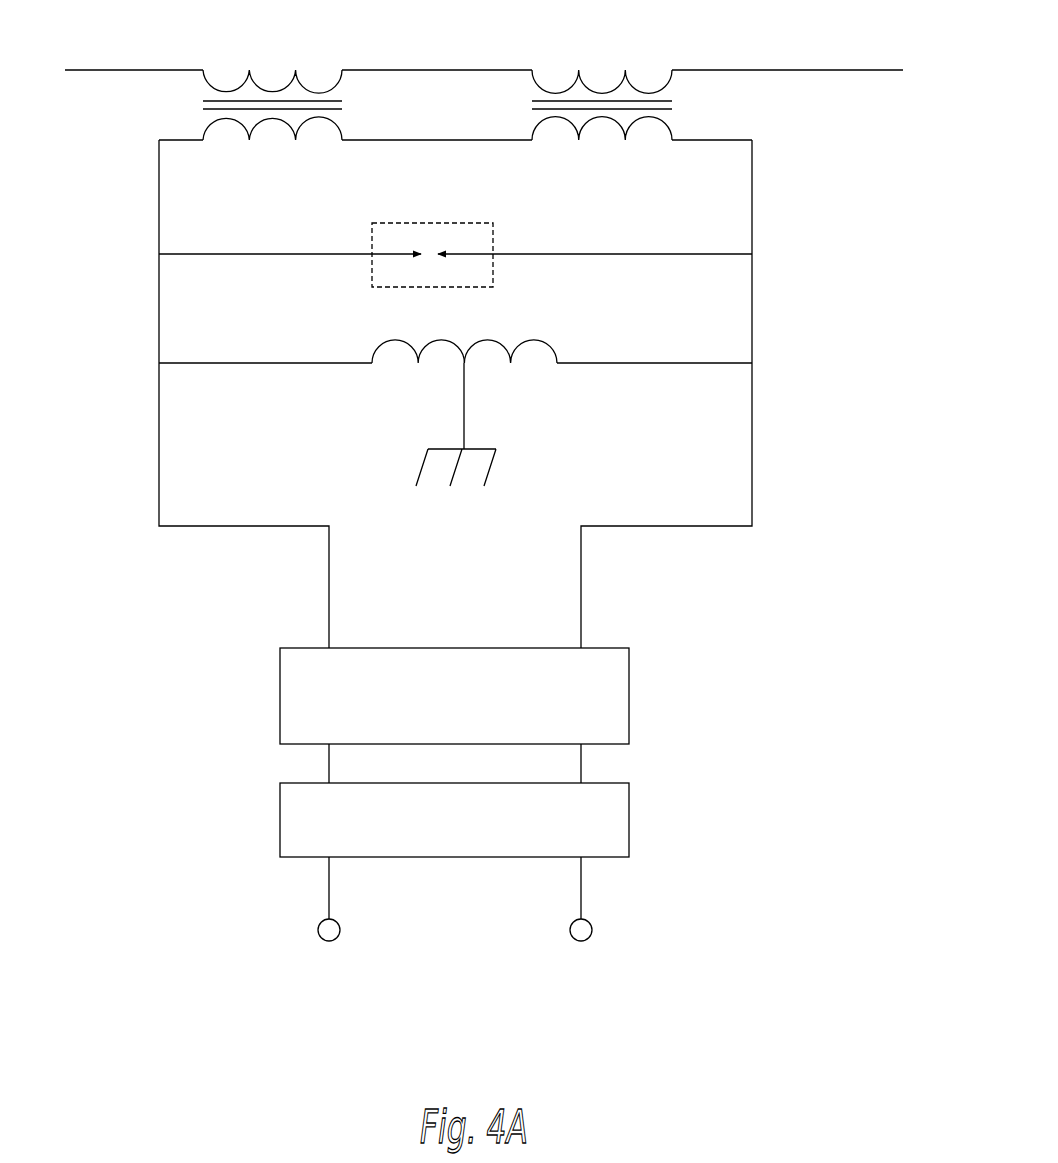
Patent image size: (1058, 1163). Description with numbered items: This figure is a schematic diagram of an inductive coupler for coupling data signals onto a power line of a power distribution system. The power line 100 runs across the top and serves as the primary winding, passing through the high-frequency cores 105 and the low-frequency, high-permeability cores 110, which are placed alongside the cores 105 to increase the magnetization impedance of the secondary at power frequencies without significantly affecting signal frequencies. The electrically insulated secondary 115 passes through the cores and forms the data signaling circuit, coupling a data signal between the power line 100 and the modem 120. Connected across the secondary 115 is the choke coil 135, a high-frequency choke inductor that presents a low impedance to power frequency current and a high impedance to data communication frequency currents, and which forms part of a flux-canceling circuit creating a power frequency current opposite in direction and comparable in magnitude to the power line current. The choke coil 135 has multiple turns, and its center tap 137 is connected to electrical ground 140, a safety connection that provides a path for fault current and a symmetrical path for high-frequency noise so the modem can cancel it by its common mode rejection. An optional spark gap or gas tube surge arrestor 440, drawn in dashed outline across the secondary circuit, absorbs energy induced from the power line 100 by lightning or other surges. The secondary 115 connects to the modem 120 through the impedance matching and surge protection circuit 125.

The power line 100 is at (819, 68).
The cores 105 is at (348, 103).
The low-frequency, high-permeability cores 110 is at (678, 103).
The secondary 115 is at (551, 140).
The spark gap or gas tube surge arrestor 440 is at (502, 238).
The choke coil 135 is at (395, 366).
The center tap 137 is at (487, 362).
The electrical ground 140 is at (500, 466).
The impedance matching and surge protection circuit 125 is at (632, 694).
The modem 120 is at (632, 822).